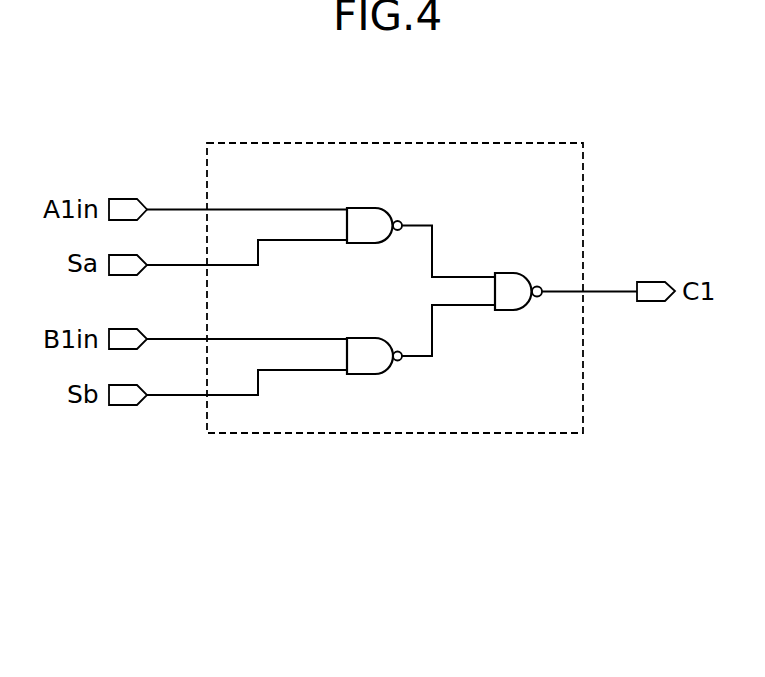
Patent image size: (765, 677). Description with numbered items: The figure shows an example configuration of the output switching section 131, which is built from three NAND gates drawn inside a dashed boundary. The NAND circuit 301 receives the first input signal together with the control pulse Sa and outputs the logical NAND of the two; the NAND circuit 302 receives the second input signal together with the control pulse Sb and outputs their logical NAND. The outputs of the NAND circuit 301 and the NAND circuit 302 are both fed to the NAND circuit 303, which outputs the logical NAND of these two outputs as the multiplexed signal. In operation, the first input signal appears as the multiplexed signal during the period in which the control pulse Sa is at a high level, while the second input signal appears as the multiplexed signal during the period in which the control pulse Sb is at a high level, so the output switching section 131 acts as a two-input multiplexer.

The output switching section 131 is at (405, 143).
The NAND circuit 301 is at (363, 207).
The NAND circuit 302 is at (360, 337).
The NAND circuit 303 is at (503, 272).